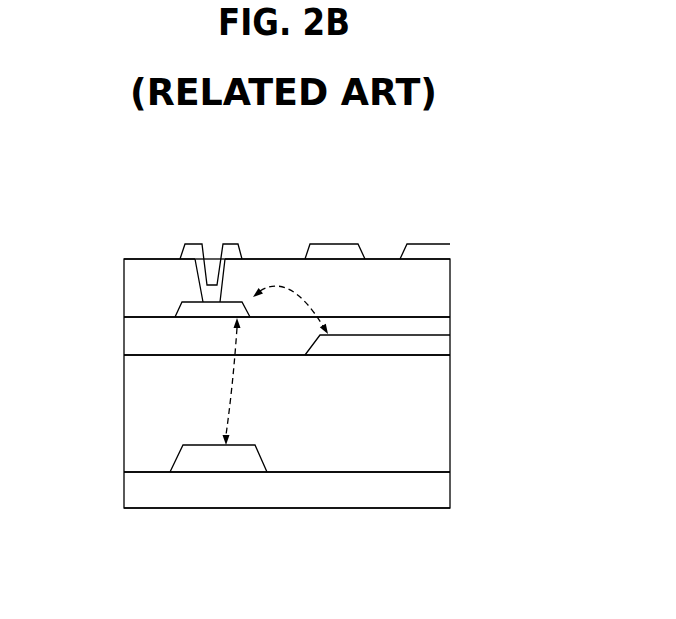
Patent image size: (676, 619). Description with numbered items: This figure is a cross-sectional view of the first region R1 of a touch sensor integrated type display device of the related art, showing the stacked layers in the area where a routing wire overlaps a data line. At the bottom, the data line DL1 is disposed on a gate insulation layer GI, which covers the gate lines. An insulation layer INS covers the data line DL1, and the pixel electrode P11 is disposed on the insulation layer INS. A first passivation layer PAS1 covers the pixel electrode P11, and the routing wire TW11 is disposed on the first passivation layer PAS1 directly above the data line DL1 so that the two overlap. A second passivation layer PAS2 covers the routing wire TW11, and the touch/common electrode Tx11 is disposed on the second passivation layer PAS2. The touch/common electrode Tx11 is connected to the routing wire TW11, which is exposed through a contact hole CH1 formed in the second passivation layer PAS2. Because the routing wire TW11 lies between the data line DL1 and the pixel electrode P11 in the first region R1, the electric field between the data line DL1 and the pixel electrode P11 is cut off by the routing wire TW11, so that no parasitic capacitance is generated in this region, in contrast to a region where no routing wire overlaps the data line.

The first region R1 is at (181, 167).
The contact hole CH1 is at (212, 234).
The routing wire TW11 is at (182, 312).
The touch/common electrode Tx11 is at (310, 250).
The second passivation layer PAS2 is at (135, 288).
The first passivation layer PAS1 is at (135, 337).
The insulation layer INS is at (135, 410).
The gate insulation layer GI is at (135, 490).
The pixel electrode P11 is at (445, 347).
The data line DL1 is at (222, 460).